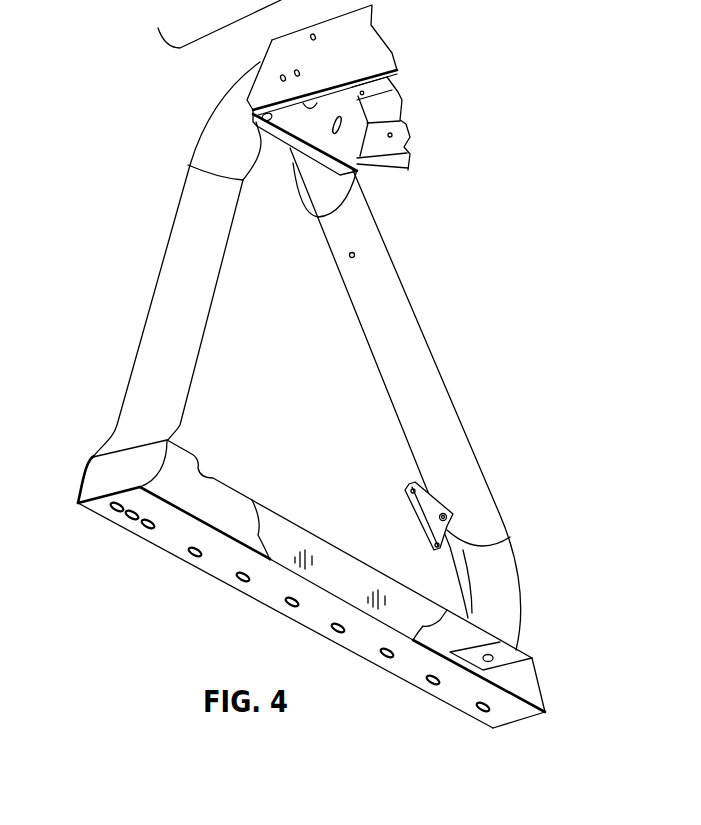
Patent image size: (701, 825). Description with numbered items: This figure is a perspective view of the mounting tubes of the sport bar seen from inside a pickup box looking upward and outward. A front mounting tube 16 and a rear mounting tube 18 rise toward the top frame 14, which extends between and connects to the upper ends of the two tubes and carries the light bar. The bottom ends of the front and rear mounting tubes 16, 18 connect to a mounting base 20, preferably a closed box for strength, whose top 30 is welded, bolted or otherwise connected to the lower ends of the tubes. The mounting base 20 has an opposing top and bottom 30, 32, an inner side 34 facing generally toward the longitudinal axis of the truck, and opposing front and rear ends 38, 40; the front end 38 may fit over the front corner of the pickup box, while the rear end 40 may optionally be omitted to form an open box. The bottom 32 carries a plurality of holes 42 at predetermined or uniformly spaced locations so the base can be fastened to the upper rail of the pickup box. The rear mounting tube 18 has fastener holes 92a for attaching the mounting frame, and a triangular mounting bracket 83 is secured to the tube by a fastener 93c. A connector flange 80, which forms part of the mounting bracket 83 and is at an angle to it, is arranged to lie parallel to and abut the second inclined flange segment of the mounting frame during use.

The top frame 14 is at (418, 142).
The front mounting tube 16 is at (182, 242).
The rear mounting tube 18 is at (428, 399).
The fastener holes in tube 92a is at (357, 255).
The mounting base 20 is at (307, 583).
The top of mounting base 30 is at (220, 484).
The bottom of mounting base 32 is at (168, 537).
The inner side of mounting base 34 is at (315, 550).
The front end of mounting base 38 is at (102, 477).
The rear end of mounting base 40 is at (545, 672).
The holes 42 is at (115, 508).
The connector flange 80 is at (461, 516).
The mounting bracket 83 is at (447, 528).
The fastener 93c is at (447, 517).